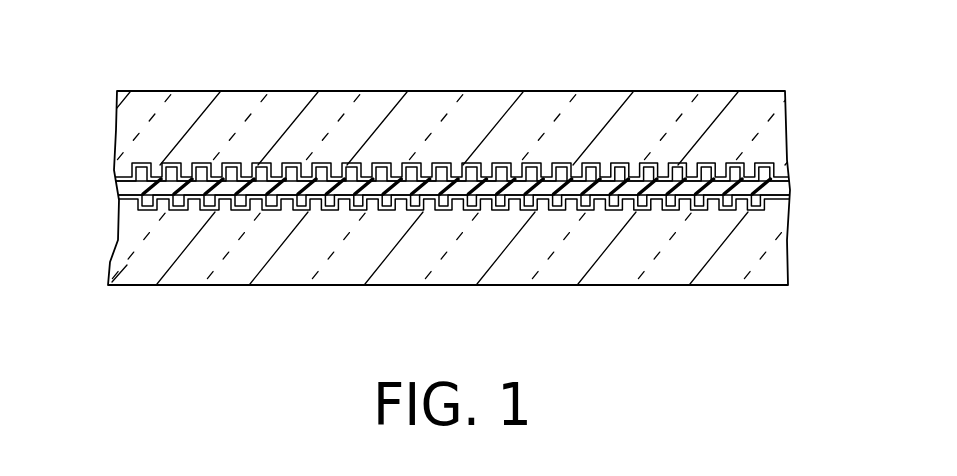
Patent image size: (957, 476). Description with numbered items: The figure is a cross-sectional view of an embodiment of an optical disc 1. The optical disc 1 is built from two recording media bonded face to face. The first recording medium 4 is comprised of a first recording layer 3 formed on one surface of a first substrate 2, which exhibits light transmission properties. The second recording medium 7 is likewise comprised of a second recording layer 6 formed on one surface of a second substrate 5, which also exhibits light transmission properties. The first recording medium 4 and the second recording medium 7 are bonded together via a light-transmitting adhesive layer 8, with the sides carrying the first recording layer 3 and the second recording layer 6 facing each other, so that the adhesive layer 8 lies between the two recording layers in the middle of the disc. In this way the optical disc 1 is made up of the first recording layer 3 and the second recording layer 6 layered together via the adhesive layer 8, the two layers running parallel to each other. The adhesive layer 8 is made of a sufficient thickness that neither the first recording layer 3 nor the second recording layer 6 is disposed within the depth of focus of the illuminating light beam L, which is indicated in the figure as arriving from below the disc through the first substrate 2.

The optical disc 1 is at (442, 70).
The first substrate 2 is at (778, 272).
The first recording layer 3 is at (763, 208).
The first recording medium 4 is at (118, 237).
The second substrate 5 is at (777, 137).
The second recording layer 6 is at (773, 171).
The second recording medium 7 is at (115, 130).
The adhesive layer 8 is at (787, 195).
The light beam L is at (637, 296).